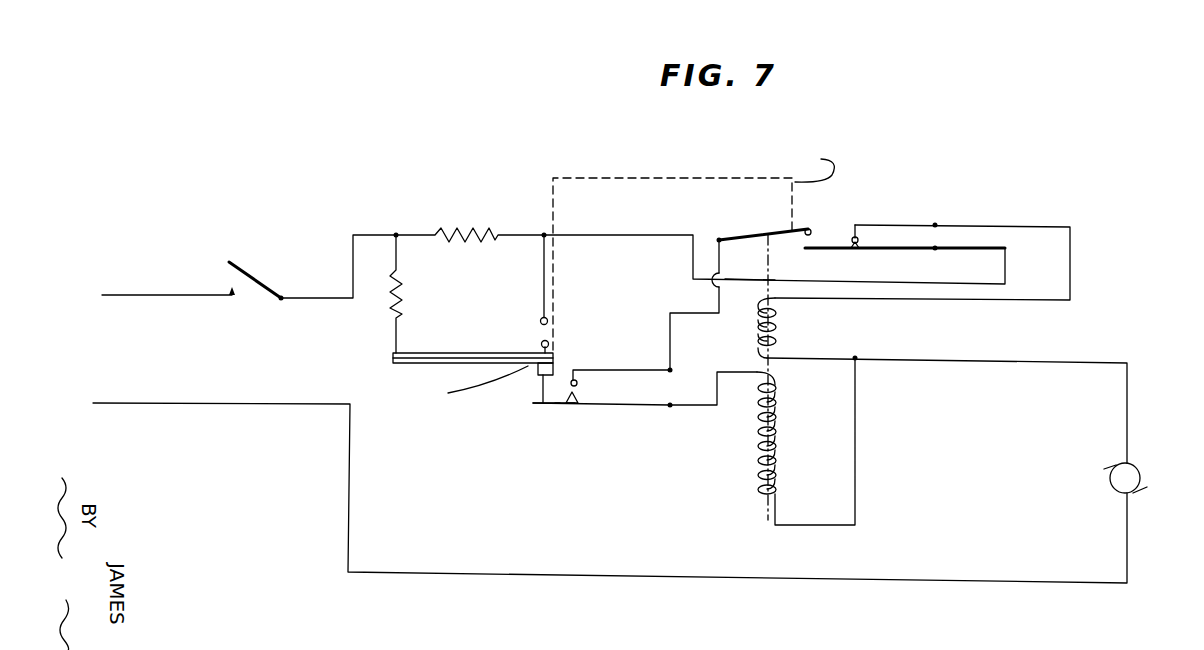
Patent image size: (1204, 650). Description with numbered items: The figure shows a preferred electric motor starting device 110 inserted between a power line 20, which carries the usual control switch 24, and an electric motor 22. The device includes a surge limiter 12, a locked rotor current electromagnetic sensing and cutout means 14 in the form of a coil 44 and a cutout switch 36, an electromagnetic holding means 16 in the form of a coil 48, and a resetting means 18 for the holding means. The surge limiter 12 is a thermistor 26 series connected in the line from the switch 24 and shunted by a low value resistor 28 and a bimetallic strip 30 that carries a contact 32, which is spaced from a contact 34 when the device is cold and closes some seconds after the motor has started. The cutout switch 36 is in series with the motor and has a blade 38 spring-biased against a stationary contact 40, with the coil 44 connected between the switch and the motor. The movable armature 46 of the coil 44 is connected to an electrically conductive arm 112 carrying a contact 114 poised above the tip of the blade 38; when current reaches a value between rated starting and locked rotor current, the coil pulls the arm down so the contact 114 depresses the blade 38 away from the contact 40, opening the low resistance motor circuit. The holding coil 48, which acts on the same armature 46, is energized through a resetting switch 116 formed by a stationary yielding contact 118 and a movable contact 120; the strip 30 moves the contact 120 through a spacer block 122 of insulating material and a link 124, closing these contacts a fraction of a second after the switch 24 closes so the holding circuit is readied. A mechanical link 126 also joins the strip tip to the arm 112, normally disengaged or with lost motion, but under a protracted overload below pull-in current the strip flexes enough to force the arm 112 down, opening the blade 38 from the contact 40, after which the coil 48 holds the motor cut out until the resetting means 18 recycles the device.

The surge limiter 12 is at (417, 217).
The locked rotor current electromagnetic sensing and motor cutout means 14 is at (792, 328).
The holding means 16 is at (774, 441).
The resetting means 18 is at (543, 411).
The power line 20 is at (155, 352).
The electric motor 22 is at (1140, 470).
The switch 24 is at (265, 290).
The thermistor 26 is at (462, 232).
The low value resistor 28 is at (392, 304).
The bimetallic strip 30 is at (463, 352).
The contact 32 is at (551, 344).
The contact 34 is at (549, 320).
The cutout switch 36 is at (890, 225).
The blade 38 is at (878, 250).
The stationary contact 40 is at (857, 235).
The coil 44 is at (762, 329).
The movable armature 46 is at (776, 276).
The coil 48 is at (780, 437).
The device 110 is at (452, 586).
The electrically conductive arm 112 is at (748, 236).
The contact 114 is at (814, 232).
The resetting switch 116 is at (583, 390).
The stationary yielding contact 118 is at (578, 378).
The movable contact 120 is at (562, 408).
The spacer block 122 is at (540, 368).
The link 124 is at (540, 392).
The mechanical link 126 is at (553, 204).